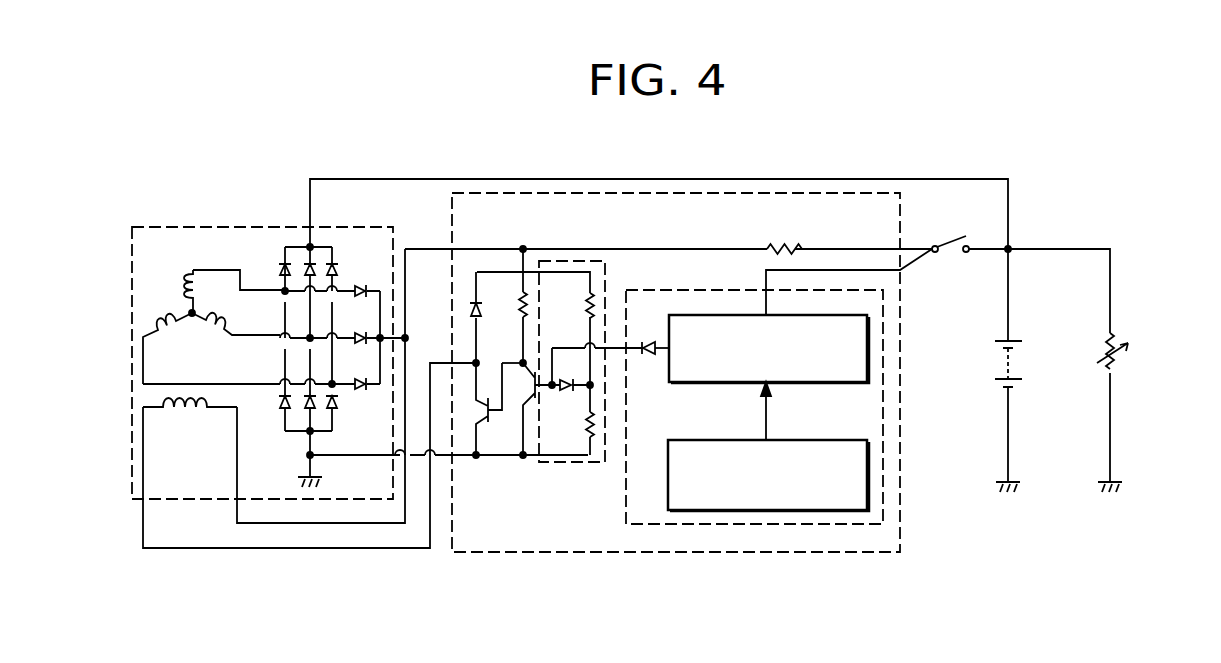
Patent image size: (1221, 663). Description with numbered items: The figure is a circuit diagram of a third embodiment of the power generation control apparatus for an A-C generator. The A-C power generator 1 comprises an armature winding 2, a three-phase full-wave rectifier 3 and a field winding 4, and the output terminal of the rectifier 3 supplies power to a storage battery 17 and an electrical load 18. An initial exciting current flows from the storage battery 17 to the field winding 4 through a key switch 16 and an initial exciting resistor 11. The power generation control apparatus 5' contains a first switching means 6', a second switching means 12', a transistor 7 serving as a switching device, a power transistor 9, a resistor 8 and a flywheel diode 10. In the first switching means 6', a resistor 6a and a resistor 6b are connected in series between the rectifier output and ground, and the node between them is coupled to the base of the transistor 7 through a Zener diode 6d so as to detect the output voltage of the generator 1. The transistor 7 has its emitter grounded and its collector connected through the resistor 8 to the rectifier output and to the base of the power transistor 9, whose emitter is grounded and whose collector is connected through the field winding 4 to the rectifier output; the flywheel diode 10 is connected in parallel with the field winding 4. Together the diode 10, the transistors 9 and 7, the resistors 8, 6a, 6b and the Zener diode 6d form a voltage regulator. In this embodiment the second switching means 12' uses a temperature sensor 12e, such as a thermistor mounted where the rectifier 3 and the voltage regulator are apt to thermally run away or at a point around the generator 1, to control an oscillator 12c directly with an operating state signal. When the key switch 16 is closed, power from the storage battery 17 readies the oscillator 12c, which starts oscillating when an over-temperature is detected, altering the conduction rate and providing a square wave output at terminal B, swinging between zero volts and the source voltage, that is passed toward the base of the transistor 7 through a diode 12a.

The A-C power generator 1 is at (200, 228).
The armature winding 2 is at (190, 297).
The three-phase full-wave rectifier 3 is at (300, 412).
The field winding 4 is at (183, 410).
The power generation control apparatus 5' is at (676, 414).
The first switching means 6' is at (561, 388).
The resistor 6a is at (590, 300).
The resistor 6b is at (590, 437).
The Zener diode 6d is at (568, 395).
The transistor 7 is at (527, 390).
The resistor 8 is at (520, 300).
The power transistor 9 is at (478, 420).
The flywheel diode 10 is at (480, 310).
The initial exciting resistor 11 is at (768, 243).
The second switching means 12' is at (754, 444).
The diode 12a is at (648, 358).
The oscillator 12c is at (812, 383).
The temperature sensor 12e is at (740, 438).
The key switch 16 is at (951, 235).
The storage battery 17 is at (1003, 370).
The electrical load 18 is at (1120, 358).